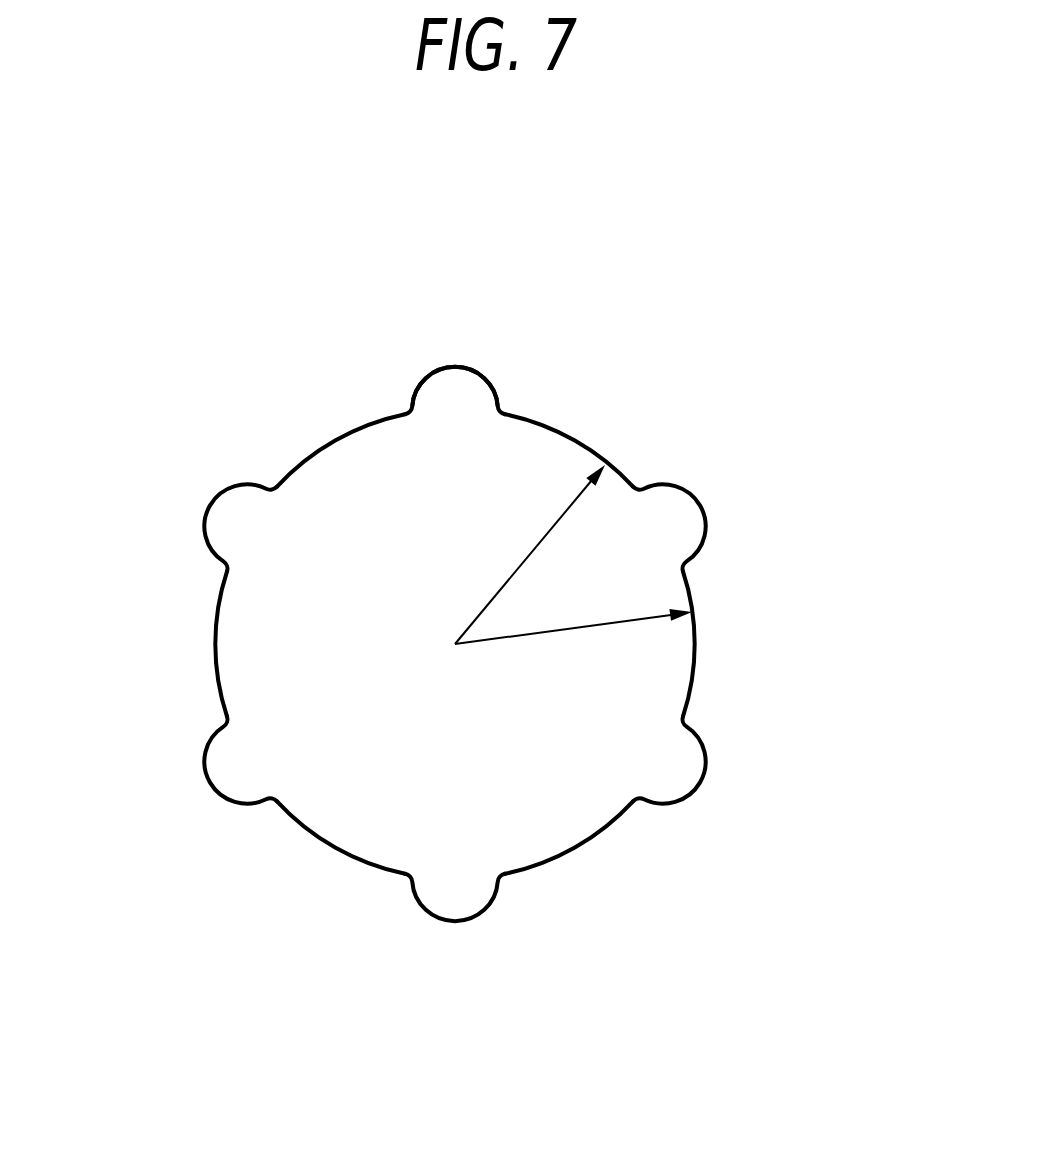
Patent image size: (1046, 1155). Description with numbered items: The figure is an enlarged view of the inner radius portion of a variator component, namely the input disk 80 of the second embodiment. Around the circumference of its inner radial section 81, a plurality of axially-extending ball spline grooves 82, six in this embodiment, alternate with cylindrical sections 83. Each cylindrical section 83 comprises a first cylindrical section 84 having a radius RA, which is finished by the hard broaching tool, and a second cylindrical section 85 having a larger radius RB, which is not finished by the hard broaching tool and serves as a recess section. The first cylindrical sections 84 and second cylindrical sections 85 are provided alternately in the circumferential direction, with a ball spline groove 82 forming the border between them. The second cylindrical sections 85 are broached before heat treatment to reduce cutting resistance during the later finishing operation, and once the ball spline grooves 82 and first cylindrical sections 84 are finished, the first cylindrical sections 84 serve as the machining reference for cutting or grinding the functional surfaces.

The input disk 80 is at (389, 219).
The inner radial section 81 is at (176, 541).
The ball spline groove 82 is at (497, 385).
The cylindrical section 83 is at (857, 417).
The first cylindrical section 84 is at (586, 443).
The second cylindrical section 85 is at (333, 441).